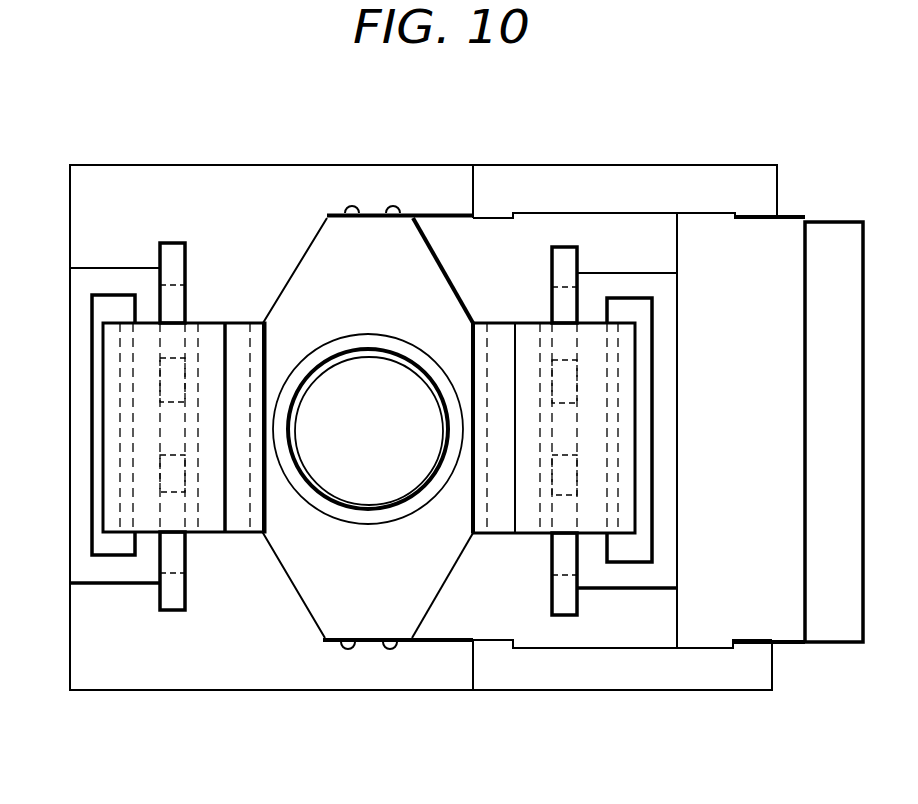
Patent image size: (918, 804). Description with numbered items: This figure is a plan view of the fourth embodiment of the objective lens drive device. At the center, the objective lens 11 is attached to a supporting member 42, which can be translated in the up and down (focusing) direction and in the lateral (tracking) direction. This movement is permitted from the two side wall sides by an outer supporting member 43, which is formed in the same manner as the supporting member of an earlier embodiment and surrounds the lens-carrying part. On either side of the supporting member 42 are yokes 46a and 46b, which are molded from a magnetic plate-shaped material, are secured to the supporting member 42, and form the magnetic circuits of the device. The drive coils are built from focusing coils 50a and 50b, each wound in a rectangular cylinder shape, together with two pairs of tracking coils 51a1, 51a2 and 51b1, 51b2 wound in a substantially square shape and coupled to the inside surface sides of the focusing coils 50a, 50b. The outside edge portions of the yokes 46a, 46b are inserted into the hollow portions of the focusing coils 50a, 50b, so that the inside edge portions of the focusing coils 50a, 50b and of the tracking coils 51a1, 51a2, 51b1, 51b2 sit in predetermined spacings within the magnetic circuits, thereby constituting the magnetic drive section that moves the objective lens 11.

The objective lens 11 is at (364, 365).
The supporting member 42 is at (314, 263).
The supporting member 43 is at (680, 165).
The yoke 46a is at (528, 322).
The yoke 46b is at (213, 323).
The focusing coil 50a is at (668, 522).
The focusing coil 50b is at (77, 488).
The tracking coil 51a1 is at (565, 255).
The tracking coil 51a2 is at (560, 610).
The tracking coil 51b1 is at (172, 253).
The tracking coil 51b2 is at (172, 603).